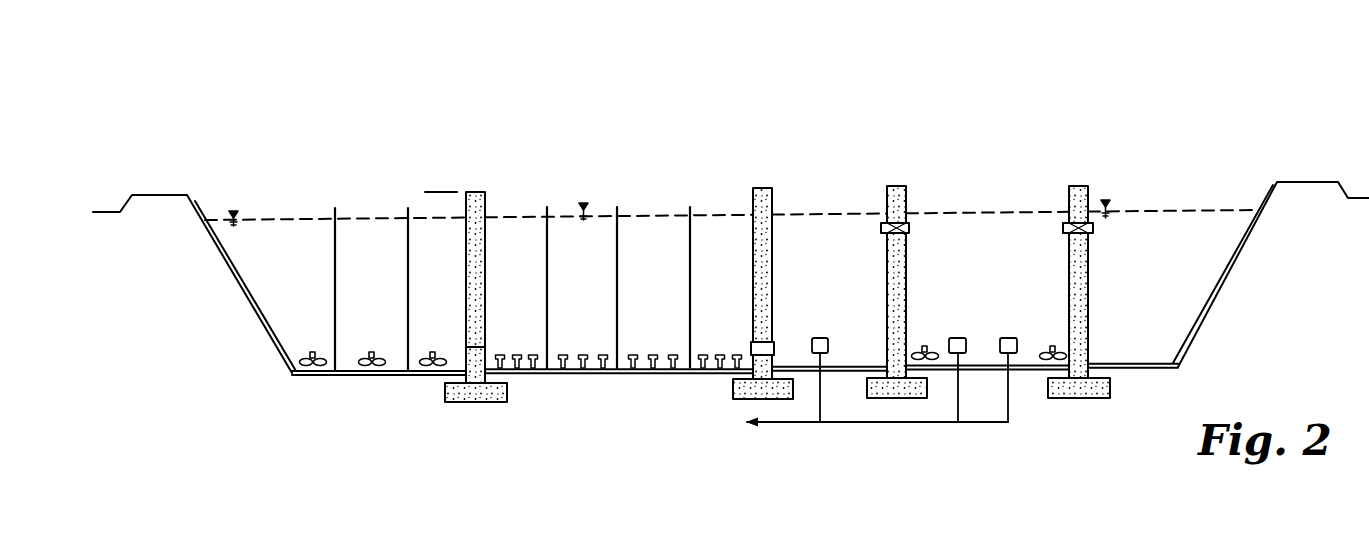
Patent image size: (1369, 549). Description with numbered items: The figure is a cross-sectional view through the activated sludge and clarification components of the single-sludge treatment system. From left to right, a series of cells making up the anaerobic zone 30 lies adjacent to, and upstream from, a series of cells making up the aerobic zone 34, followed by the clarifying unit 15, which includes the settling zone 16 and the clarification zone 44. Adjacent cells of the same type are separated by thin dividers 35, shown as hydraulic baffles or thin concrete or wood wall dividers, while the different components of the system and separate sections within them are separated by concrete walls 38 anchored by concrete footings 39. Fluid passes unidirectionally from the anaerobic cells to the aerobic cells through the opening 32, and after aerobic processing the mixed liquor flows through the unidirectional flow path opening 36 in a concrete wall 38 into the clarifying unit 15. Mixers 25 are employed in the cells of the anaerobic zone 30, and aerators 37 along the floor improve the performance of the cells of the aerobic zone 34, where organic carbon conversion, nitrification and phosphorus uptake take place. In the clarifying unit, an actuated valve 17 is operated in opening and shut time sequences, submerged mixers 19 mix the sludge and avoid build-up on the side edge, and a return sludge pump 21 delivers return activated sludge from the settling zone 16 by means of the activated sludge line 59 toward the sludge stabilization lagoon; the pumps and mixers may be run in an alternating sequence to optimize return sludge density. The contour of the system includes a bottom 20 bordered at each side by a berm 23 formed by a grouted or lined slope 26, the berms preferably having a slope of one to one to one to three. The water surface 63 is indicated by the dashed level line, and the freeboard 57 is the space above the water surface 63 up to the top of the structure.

The clarifying unit 15 is at (928, 117).
The settling zone 16 is at (835, 256).
The actuated valve 17 is at (878, 220).
The mixers 19 is at (1048, 347).
The bottom 20 is at (1163, 361).
The return sludge pump 21 is at (827, 357).
The berm 23 is at (130, 193).
The mixers 25 is at (419, 352).
The slope 26 is at (260, 323).
The anaerobic zone 30 is at (168, 129).
The opening 32 is at (474, 353).
The aerobic zone 34 is at (650, 120).
The divider 35 is at (404, 207).
The flow path opening 36 is at (775, 344).
The aerators 37 is at (519, 370).
The concrete wall 38 is at (469, 189).
The concrete footing 39 is at (478, 405).
The clarification zone 44 is at (1178, 257).
The freeboard 57 is at (437, 189).
The activated sludge line 59 is at (804, 426).
The water surface 63 is at (960, 212).